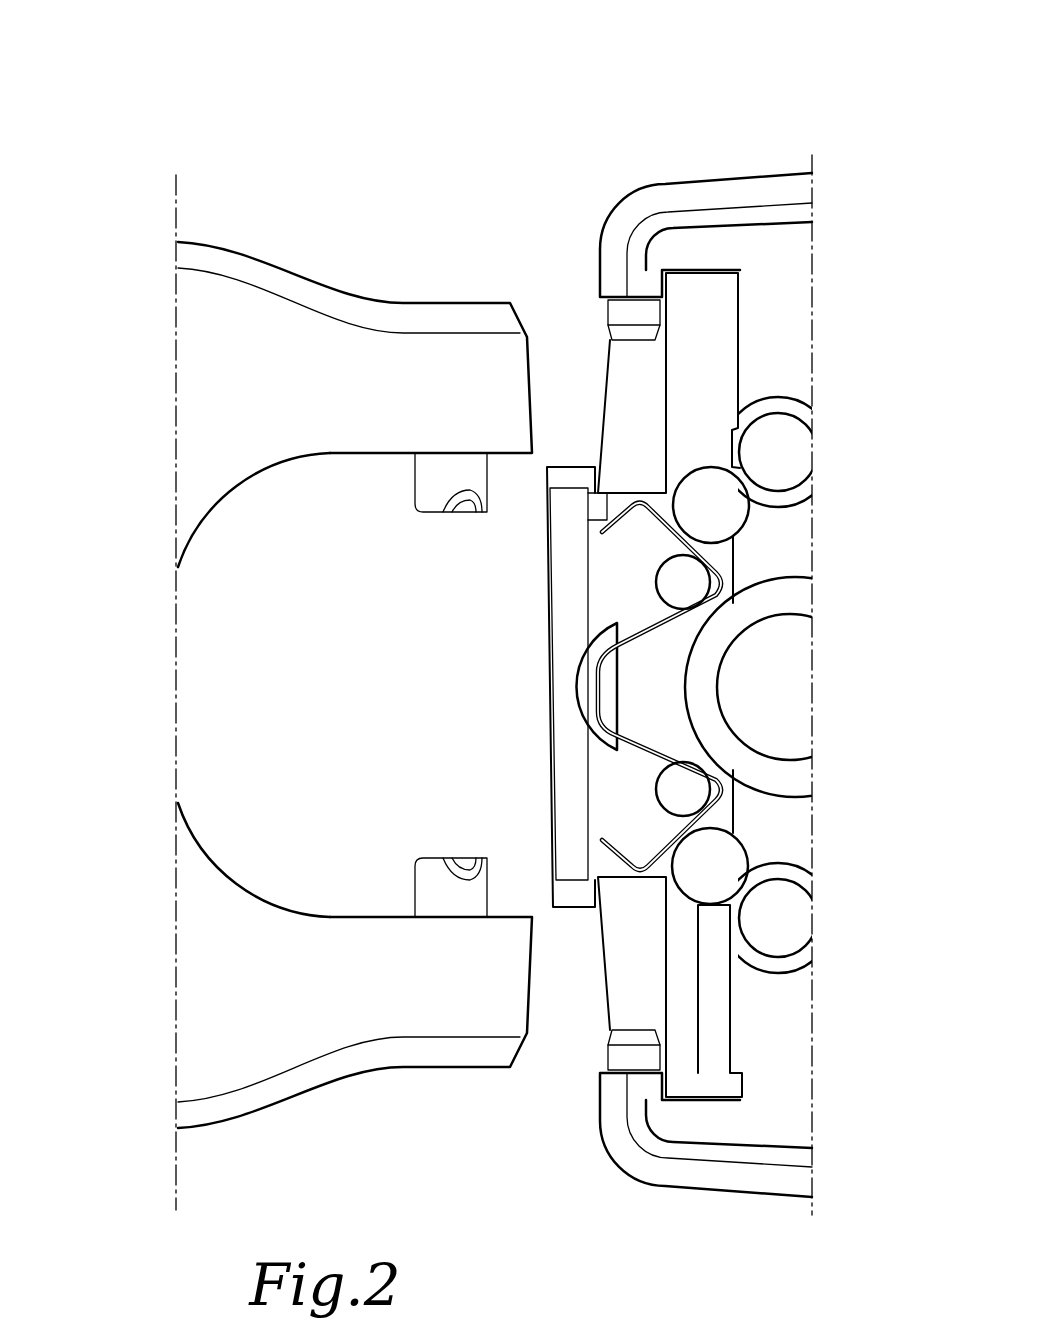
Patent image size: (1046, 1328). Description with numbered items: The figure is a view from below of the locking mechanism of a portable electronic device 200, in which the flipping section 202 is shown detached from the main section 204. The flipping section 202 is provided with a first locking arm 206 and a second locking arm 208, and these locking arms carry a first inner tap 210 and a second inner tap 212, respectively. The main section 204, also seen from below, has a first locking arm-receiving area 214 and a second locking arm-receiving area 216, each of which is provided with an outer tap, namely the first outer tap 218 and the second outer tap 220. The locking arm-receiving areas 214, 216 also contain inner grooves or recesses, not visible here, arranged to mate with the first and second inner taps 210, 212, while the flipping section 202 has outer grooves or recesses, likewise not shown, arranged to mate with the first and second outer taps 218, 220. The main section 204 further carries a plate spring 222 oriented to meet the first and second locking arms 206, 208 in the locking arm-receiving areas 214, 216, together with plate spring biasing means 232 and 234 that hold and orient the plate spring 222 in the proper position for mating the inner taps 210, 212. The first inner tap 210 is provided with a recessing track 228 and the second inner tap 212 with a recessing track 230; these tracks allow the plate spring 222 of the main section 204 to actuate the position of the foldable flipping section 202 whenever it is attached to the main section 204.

The portable electronic device 200 is at (232, 85).
The flipping section 202 is at (216, 424).
The main section 204 is at (718, 170).
The first locking arm 206 is at (462, 370).
The second locking arm 208 is at (460, 982).
The first inner tap 210 is at (443, 472).
The second inner tap 212 is at (440, 892).
The first locking arm-receiving area 214 is at (688, 372).
The second locking arm-receiving area 216 is at (686, 965).
The first outer tap 218 is at (622, 313).
The second outer tap 220 is at (625, 1055).
The plate spring 222 is at (660, 627).
The recessing track 228 is at (467, 515).
The recessing track 230 is at (462, 866).
The plate spring biasing means 232 is at (585, 687).
The plate spring biasing means 234 is at (687, 580).